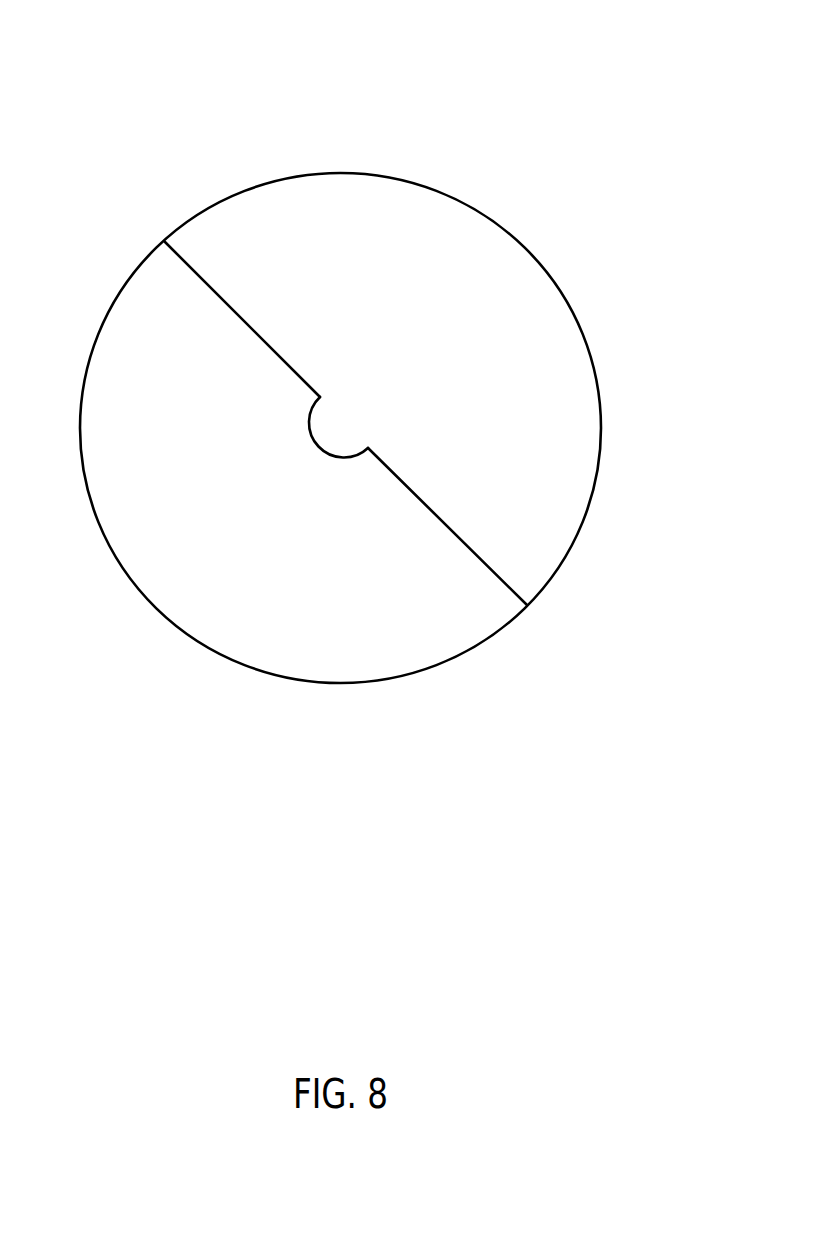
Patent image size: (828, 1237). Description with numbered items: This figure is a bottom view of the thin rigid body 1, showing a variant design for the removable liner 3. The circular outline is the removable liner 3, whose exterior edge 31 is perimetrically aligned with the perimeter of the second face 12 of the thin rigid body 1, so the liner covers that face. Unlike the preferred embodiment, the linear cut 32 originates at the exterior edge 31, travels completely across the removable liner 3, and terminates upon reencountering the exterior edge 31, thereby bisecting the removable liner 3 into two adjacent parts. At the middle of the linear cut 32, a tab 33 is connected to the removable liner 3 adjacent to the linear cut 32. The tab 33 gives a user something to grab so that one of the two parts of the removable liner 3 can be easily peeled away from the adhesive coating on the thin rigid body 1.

The thin rigid body 1 is at (375, 80).
The removable liner 3 is at (166, 354).
The second face 12 is at (592, 678).
The exterior edge 31 is at (325, 683).
The linear cut 32 is at (250, 326).
The tab 33 is at (325, 433).